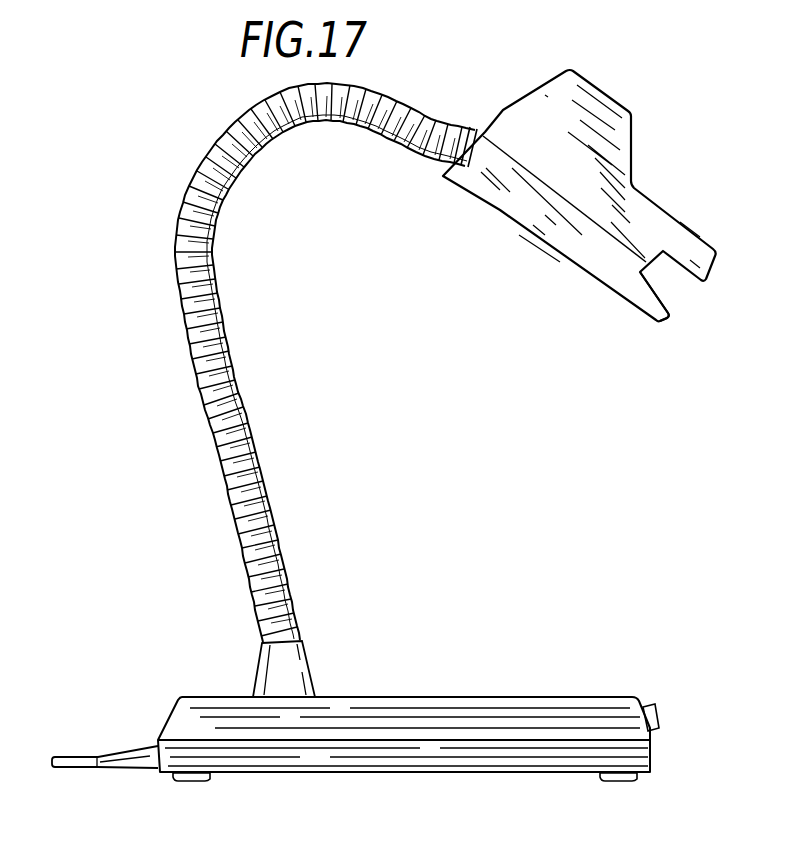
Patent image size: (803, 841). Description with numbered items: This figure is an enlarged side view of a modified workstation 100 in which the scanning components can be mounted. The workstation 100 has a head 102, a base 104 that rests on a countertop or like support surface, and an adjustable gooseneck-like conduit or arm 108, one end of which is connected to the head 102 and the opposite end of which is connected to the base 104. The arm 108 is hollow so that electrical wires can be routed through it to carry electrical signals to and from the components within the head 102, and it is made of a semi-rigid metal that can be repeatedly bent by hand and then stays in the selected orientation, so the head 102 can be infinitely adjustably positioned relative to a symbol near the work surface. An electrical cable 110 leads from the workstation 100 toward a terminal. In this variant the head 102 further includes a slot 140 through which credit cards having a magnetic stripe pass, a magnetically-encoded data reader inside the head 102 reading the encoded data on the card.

The workstation 100 is at (614, 376).
The head 102 is at (555, 95).
The base 104 is at (548, 707).
The adjustable gooseneck-like conduit or arm 108 is at (228, 126).
The electrical cable 110 is at (70, 755).
The slot 140 is at (678, 300).